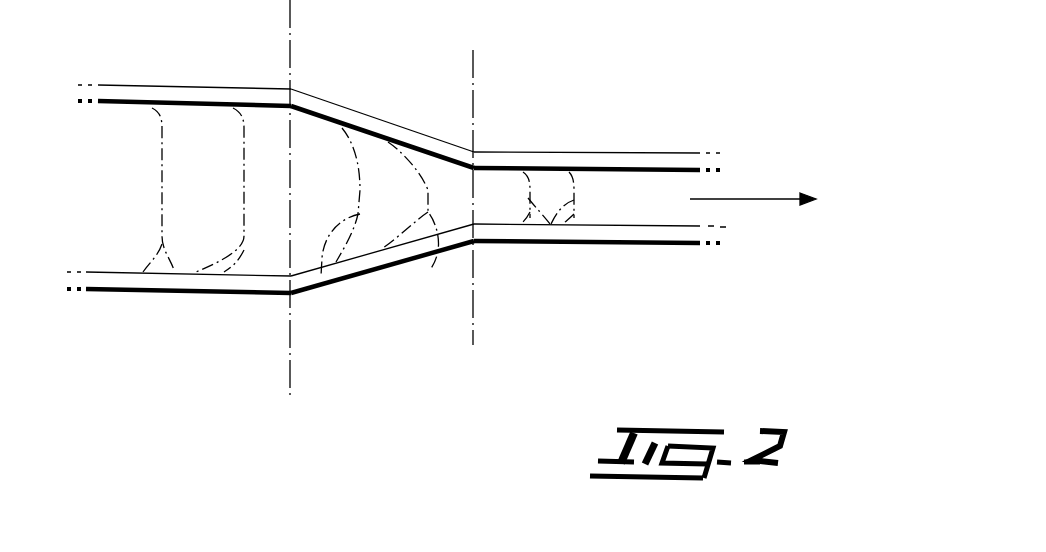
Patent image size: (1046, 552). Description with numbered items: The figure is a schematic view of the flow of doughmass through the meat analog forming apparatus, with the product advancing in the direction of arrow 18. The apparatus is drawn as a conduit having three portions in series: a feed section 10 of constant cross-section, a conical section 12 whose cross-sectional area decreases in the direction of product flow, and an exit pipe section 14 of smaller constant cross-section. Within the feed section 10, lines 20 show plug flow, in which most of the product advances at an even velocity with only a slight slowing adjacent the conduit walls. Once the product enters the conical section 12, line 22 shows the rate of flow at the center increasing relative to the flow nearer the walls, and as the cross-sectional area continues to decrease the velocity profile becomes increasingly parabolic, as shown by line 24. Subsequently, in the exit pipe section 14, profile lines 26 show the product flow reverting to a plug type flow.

The feed section 10 is at (166, 70).
The conical section 12 is at (386, 74).
The exit pipe section 14 is at (632, 126).
The arrow 18 is at (755, 200).
The lines 20 is at (176, 288).
The line 22 is at (321, 278).
The line 24 is at (430, 270).
The profile lines 26 is at (550, 224).